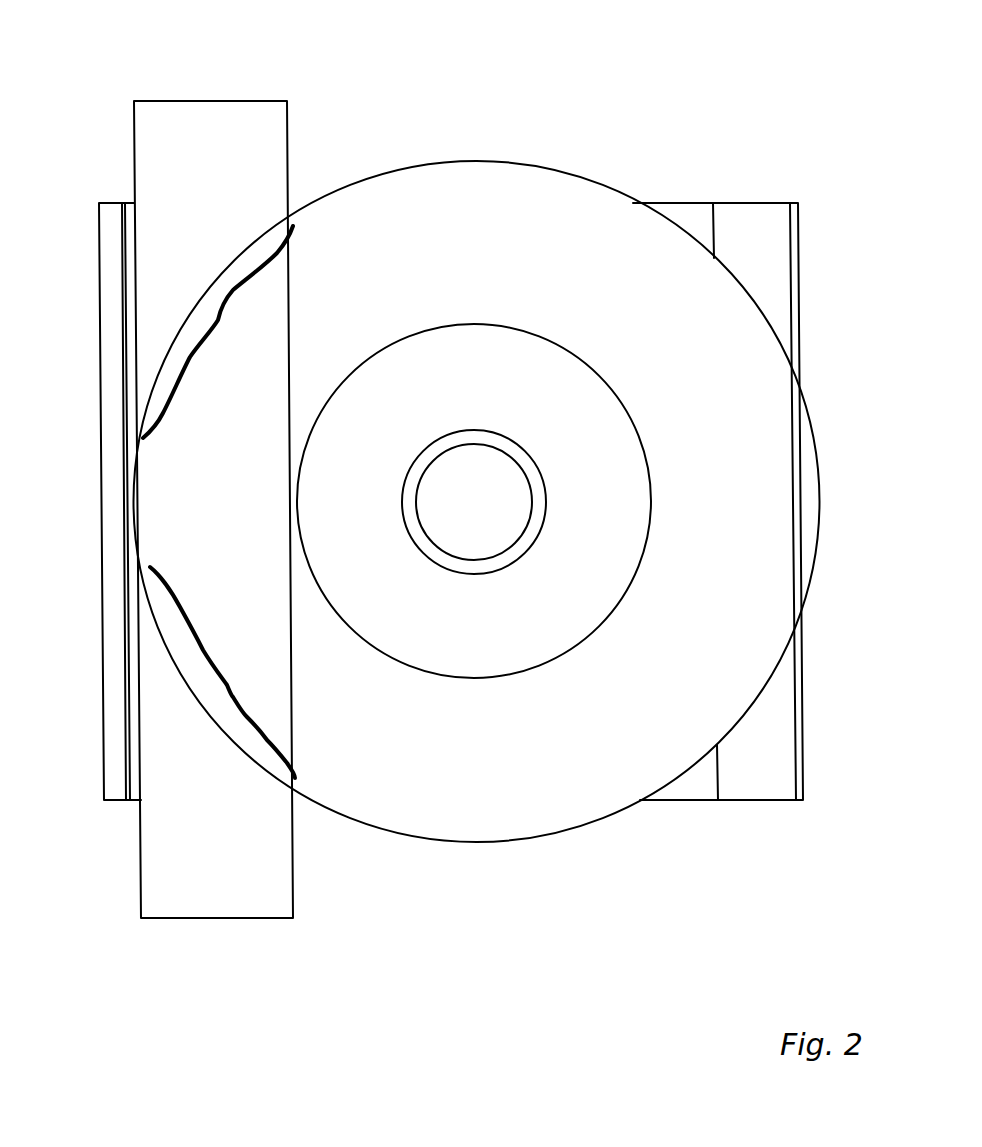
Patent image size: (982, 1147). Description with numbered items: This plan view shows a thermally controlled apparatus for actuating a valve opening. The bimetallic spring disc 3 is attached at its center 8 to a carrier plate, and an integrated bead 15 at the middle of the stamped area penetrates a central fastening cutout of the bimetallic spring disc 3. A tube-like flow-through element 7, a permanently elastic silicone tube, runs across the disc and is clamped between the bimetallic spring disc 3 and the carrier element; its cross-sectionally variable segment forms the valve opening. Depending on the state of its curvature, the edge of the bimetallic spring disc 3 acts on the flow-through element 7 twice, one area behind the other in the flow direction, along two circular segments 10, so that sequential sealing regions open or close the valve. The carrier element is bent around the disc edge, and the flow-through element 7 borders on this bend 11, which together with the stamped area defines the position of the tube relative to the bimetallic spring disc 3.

The bimetallic spring disc 3 is at (597, 263).
The flow-through element 7 is at (228, 133).
The center 8 is at (471, 503).
The circular segments 10 is at (219, 314).
The bend 11 is at (105, 250).
The integrated bead 15 is at (540, 507).